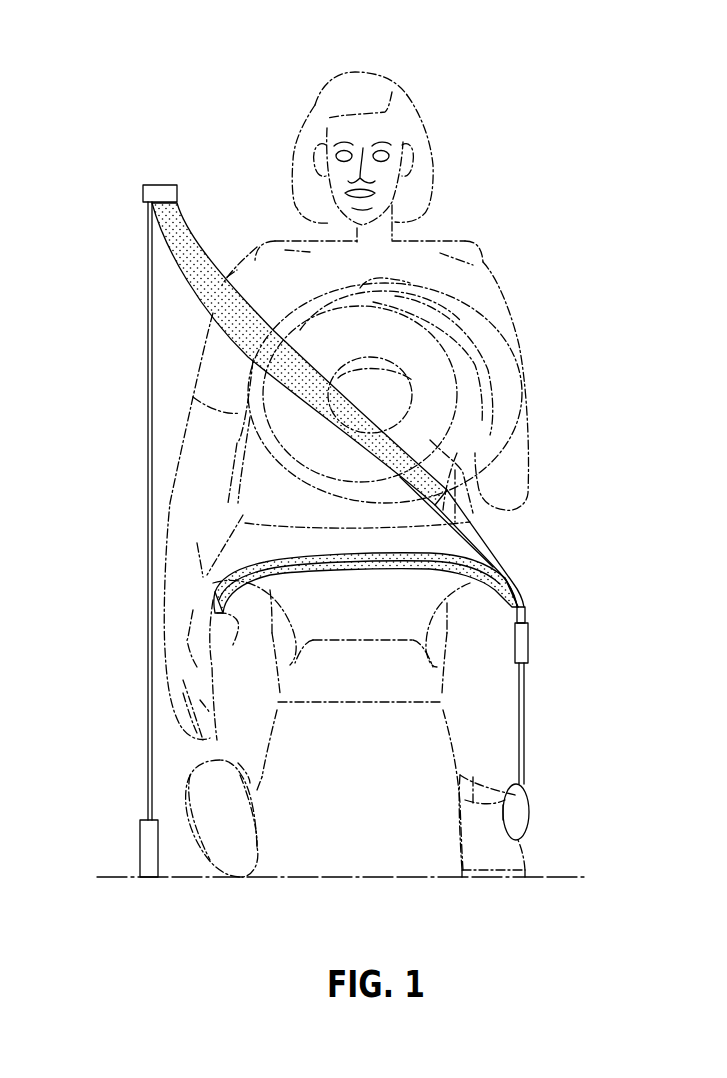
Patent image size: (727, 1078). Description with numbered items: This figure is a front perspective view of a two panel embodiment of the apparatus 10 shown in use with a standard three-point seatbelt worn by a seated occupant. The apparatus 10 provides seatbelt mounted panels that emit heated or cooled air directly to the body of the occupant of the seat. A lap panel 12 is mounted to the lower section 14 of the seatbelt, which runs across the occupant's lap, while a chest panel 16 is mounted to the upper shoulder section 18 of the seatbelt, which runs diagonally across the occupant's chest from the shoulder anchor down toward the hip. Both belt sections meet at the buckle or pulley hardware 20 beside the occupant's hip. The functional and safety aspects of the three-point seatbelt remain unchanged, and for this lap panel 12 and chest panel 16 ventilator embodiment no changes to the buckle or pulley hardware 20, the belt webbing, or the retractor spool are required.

The apparatus 10 is at (143, 57).
The lap panel 12 is at (275, 550).
The lower section 14 is at (213, 597).
The chest panel 16 is at (420, 447).
The upper shoulder section 18 is at (483, 537).
The buckle or pulley hardware 20 is at (537, 638).